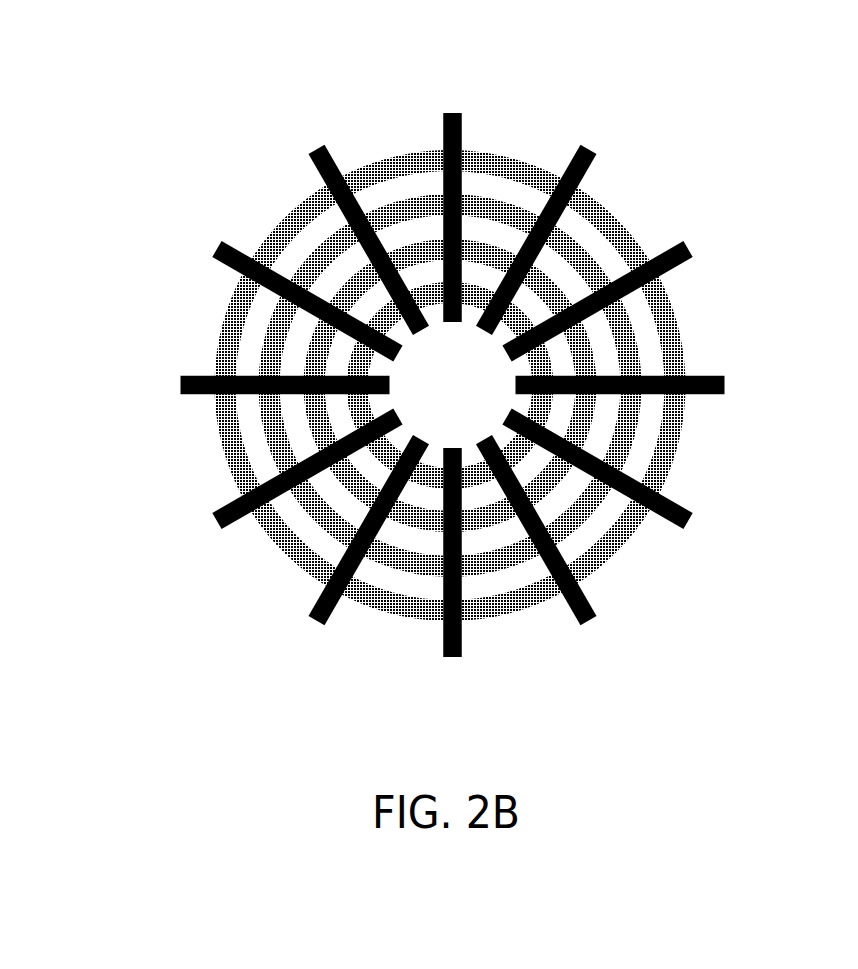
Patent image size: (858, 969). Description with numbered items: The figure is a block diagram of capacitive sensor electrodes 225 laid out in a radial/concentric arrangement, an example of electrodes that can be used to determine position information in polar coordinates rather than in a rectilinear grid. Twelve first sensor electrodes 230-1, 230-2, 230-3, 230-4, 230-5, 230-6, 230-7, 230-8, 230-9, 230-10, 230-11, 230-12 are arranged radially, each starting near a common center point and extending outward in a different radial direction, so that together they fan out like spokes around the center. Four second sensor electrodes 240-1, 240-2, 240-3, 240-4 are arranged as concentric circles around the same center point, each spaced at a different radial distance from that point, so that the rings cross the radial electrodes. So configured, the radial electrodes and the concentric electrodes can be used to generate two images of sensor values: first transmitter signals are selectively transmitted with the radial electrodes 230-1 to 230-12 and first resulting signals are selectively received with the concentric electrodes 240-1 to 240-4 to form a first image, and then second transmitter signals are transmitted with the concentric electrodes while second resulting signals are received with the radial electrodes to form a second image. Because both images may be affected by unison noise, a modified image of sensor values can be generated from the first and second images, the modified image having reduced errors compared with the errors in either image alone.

The capacitive sensor electrodes 225 is at (178, 86).
The first sensor electrode 230-1 is at (179, 392).
The first sensor electrode 230-2 is at (214, 258).
The first sensor electrode 230-3 is at (314, 167).
The first sensor electrode 230-4 is at (452, 113).
The first sensor electrode 230-5 is at (585, 150).
The first sensor electrode 230-6 is at (690, 243).
The first sensor electrode 230-7 is at (725, 382).
The first sensor electrode 230-8 is at (690, 513).
The first sensor electrode 230-9 is at (590, 622).
The first sensor electrode 230-10 is at (457, 657).
The first sensor electrode 230-11 is at (313, 623).
The first sensor electrode 230-12 is at (212, 530).
The second sensor electrode 240-1 is at (386, 160).
The second sensor electrode 240-2 is at (503, 212).
The second sensor electrode 240-3 is at (548, 287).
The second sensor electrode 240-4 is at (548, 357).